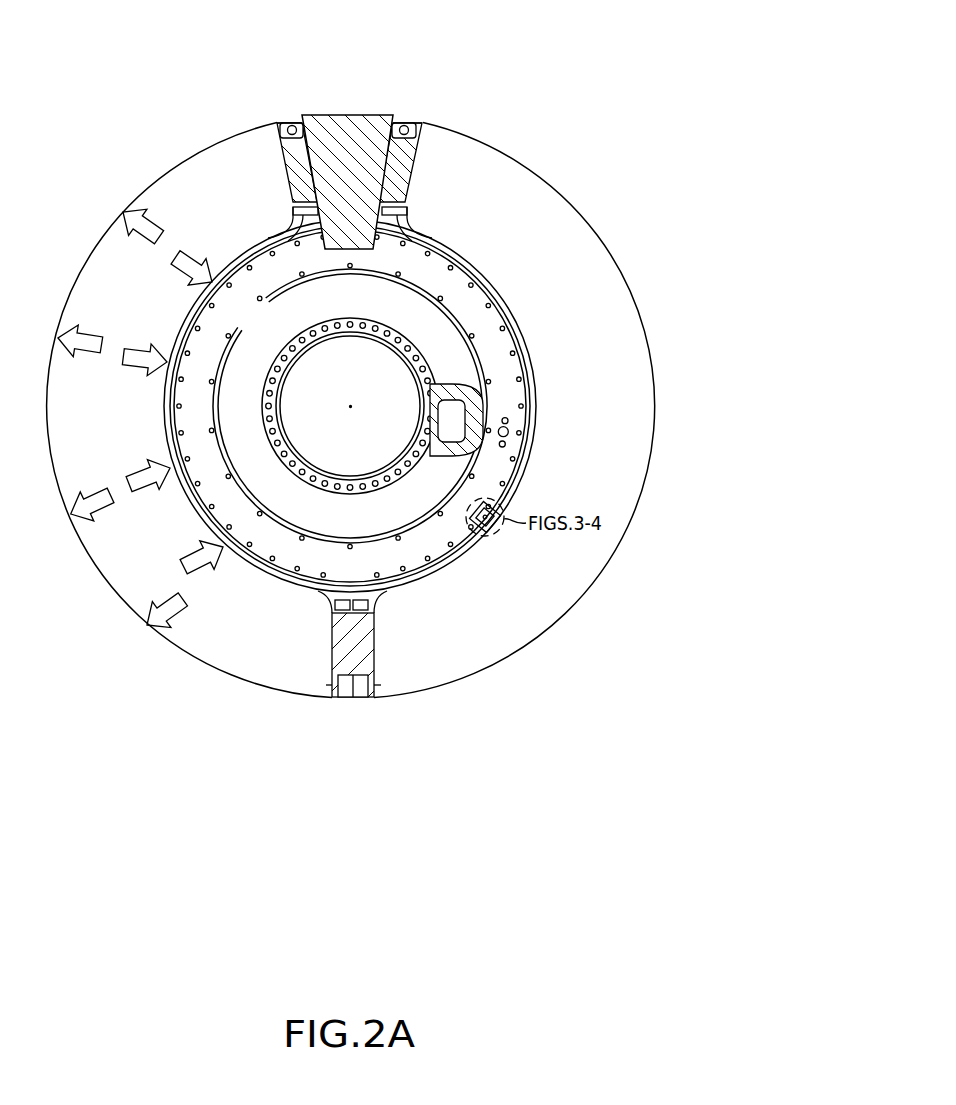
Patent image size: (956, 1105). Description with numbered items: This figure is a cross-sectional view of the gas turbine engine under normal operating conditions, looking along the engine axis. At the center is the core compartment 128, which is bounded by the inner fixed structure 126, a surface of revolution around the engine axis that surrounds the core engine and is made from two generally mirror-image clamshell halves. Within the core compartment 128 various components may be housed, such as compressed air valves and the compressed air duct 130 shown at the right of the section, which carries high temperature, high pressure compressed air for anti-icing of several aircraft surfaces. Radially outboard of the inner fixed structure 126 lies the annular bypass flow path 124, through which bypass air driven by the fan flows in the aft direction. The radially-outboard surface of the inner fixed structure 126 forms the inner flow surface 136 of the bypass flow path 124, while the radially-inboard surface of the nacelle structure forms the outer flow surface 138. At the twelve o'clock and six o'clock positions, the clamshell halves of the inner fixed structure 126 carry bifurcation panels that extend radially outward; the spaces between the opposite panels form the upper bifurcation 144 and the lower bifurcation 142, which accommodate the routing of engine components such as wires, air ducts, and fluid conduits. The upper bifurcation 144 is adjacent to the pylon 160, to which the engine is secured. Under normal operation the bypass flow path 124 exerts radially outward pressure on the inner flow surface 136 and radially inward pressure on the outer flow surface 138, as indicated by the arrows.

The bypass flow path 124 is at (608, 353).
The inner fixed structure 126 is at (190, 313).
The core compartment 128 is at (268, 328).
The compressed air duct 130 is at (490, 402).
The inner flow surface 136 is at (470, 262).
The outer flow surface 138 is at (472, 138).
The lower bifurcation 142 is at (381, 642).
The upper bifurcation 144 is at (298, 172).
The pylon 160 is at (335, 126).